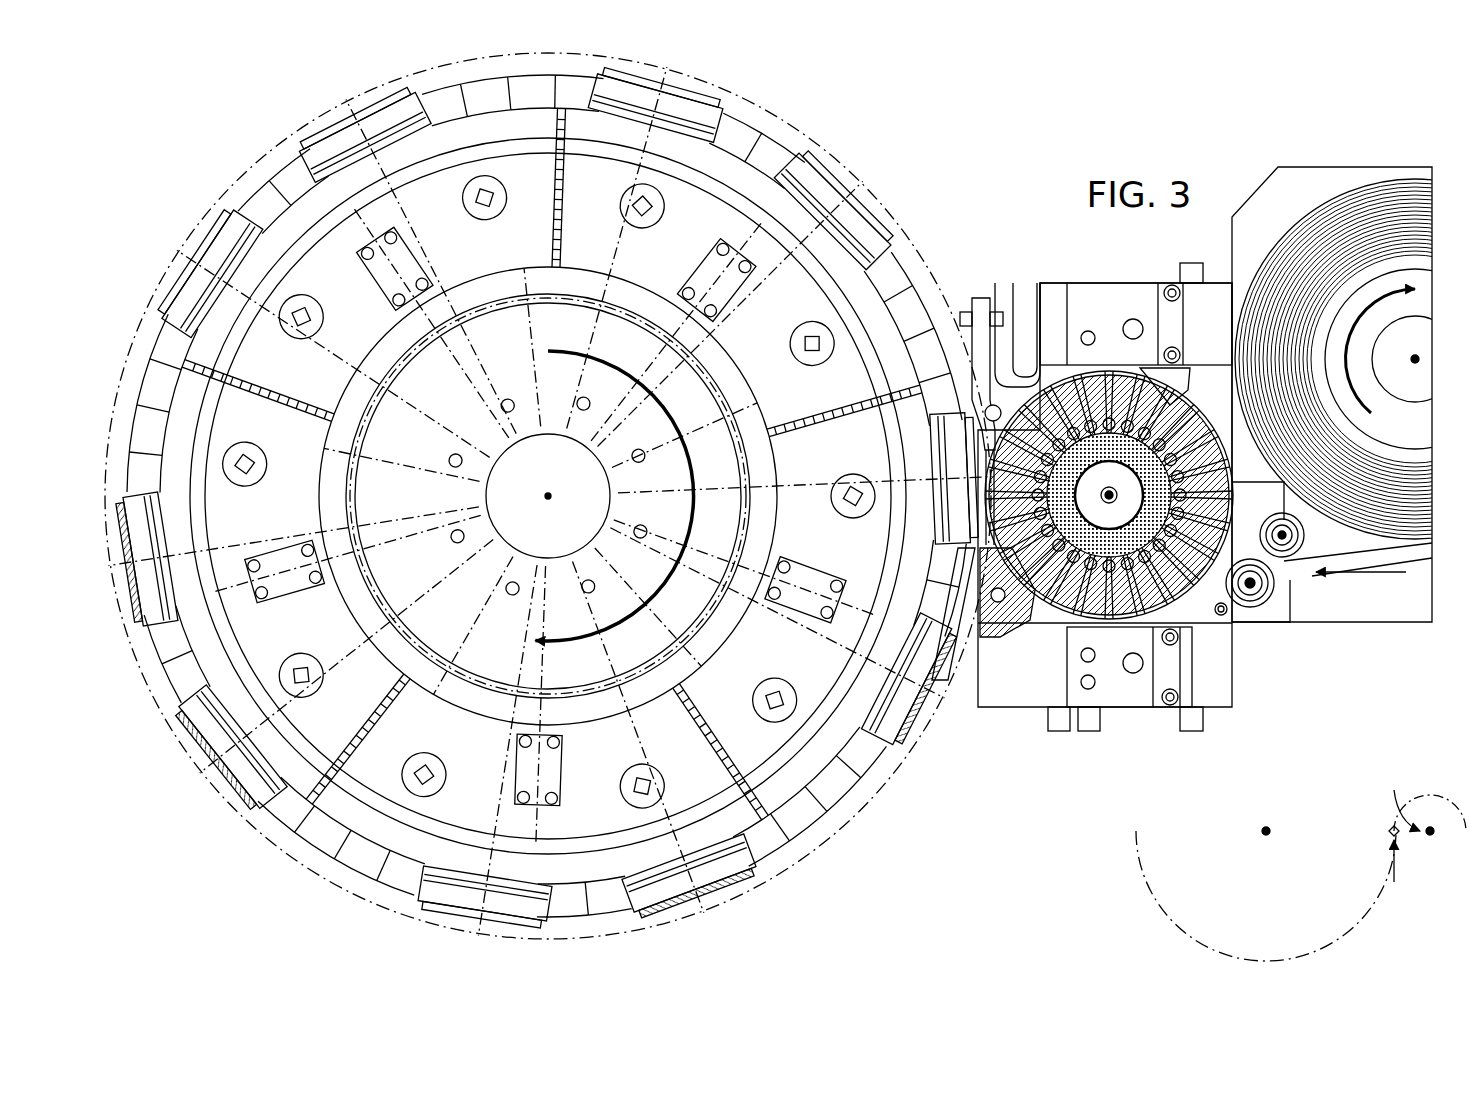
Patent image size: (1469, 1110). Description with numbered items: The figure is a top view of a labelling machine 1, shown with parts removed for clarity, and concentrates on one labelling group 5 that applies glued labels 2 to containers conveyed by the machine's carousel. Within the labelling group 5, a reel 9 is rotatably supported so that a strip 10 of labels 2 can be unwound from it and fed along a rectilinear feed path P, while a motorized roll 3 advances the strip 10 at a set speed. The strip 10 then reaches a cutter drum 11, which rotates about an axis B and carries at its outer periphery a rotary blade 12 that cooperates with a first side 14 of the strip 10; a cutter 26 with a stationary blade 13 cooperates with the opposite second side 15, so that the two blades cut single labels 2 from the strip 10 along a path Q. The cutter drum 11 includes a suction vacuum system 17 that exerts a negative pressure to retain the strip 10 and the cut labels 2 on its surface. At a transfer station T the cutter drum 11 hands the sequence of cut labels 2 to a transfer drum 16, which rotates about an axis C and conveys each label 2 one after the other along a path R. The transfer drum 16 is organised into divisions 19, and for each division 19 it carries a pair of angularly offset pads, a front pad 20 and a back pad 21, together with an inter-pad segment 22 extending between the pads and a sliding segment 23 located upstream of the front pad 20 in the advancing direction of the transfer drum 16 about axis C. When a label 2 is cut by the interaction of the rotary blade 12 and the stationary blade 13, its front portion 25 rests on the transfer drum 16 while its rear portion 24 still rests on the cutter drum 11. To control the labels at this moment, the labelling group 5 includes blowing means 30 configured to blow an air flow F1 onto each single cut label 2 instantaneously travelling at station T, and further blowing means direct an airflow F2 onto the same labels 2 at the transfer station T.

The labelling machine 1 is at (1012, 193).
The label 2 is at (217, 785).
The motorized roll 3 is at (1302, 592).
The labelling group 5 is at (878, 180).
The reel 9 is at (1288, 212).
The strip 10 is at (1428, 548).
The cutter drum 11 is at (1102, 342).
The rotary blade 12 is at (1013, 450).
The stationary blade 13 is at (963, 455).
The first side 14 is at (1245, 525).
The second side 15 is at (1142, 368).
The transfer drum 16 is at (345, 862).
The suction vacuum system 17 is at (1119, 622).
The division 19 is at (325, 278).
The front pad 20 is at (902, 694).
The back pad 21 is at (955, 487).
The inter-pad segment 22 is at (950, 578).
The sliding segment 23 is at (365, 875).
The rear portion 24 is at (712, 885).
The front portion 25 is at (528, 913).
The cutter 26 is at (1003, 370).
The blowing means 30 is at (978, 548).
The axis C is at (548, 494).
The path R is at (278, 848).
The transfer station T is at (975, 466).
The path Q is at (1195, 397).
The axis B is at (1124, 500).
The rectilinear feed path P is at (1293, 578).
The air flow F1 is at (1400, 868).
The airflow F2 is at (1399, 796).